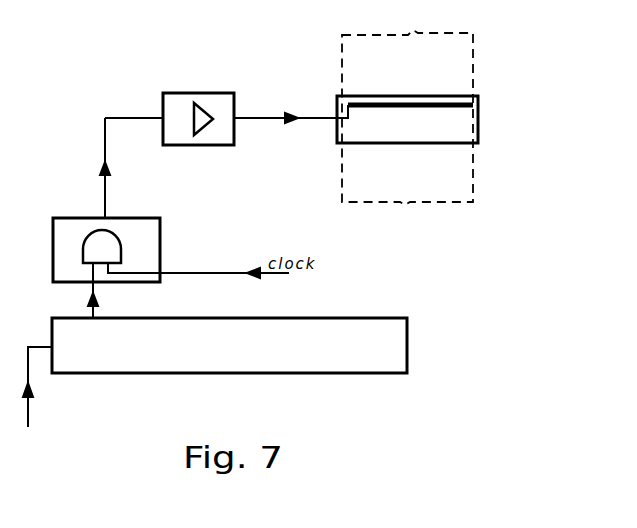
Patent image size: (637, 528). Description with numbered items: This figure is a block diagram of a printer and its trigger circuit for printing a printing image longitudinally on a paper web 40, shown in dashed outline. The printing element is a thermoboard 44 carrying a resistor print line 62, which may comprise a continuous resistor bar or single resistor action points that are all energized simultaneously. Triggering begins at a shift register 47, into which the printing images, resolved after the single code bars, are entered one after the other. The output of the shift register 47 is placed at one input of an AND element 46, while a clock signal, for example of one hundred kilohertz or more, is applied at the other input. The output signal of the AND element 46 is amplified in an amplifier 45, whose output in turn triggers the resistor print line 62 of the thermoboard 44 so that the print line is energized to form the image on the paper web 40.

The paper web 40 is at (468, 57).
The thermoboard 44 is at (482, 125).
The resistor print line 62 is at (398, 103).
The amplifier 45 is at (210, 92).
The AND element 46 is at (155, 235).
The shift register 47 is at (275, 374).